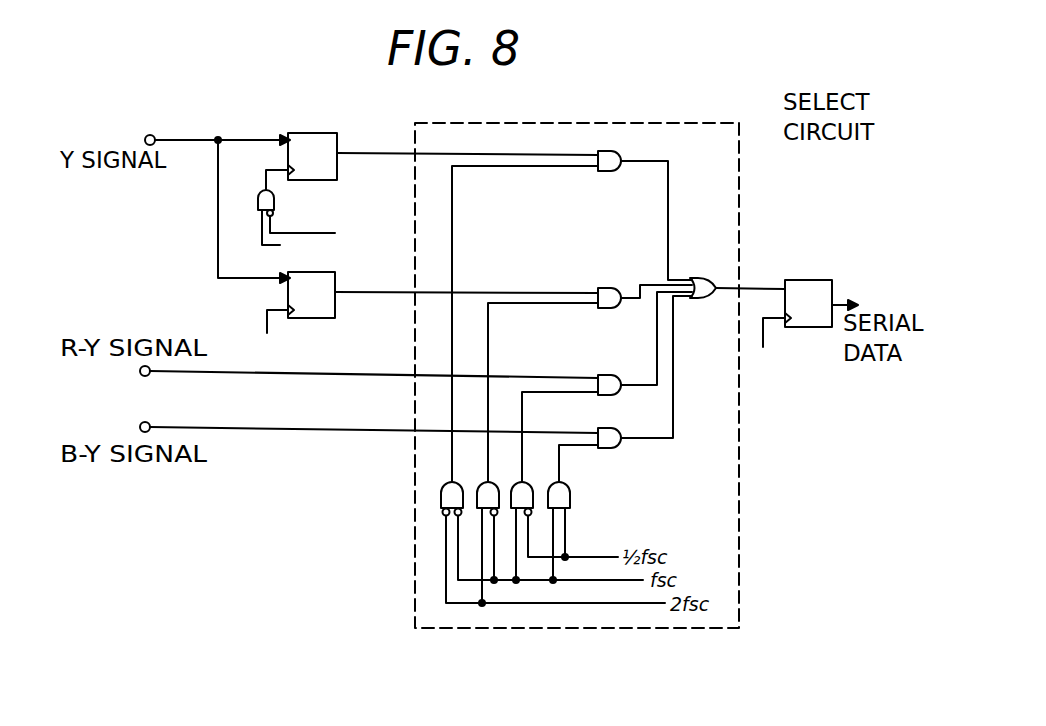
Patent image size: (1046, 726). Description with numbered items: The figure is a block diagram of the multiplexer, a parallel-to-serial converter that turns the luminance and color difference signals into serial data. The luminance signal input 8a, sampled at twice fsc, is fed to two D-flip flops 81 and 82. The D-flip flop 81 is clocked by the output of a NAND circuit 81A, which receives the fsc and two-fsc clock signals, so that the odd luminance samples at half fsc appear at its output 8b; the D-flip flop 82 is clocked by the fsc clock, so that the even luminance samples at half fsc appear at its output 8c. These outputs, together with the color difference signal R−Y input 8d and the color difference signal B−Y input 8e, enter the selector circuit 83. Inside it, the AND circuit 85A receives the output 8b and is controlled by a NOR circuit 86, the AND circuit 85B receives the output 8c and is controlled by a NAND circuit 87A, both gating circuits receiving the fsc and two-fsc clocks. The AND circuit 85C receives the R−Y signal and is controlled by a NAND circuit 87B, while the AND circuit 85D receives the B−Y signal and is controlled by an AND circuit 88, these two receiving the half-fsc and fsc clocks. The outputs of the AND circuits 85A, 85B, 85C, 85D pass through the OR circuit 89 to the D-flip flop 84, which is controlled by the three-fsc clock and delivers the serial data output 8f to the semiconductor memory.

The luminance signal input 8a is at (200, 140).
The D-flip flop 81 is at (322, 133).
The NAND circuit 81A is at (276, 202).
The output of D-flip flop 81 8b is at (368, 153).
The D-flip flop 82 is at (320, 319).
The output of D-flip flop 82 8c is at (372, 293).
The color difference signal R−Y input 8d is at (369, 375).
The color difference signal B−Y input 8e is at (343, 431).
The selector circuit 83 is at (727, 122).
The AND circuit 85A is at (609, 172).
The AND circuit 85B is at (604, 287).
The AND circuit 85C is at (601, 375).
The AND circuit 85D is at (626, 447).
The OR circuit 89 is at (706, 279).
The D-flip flop 84 is at (802, 280).
The serial data output 8f is at (842, 304).
The NOR circuit 86 is at (441, 494).
The NAND circuit 87A is at (480, 484).
The NAND circuit 87B is at (533, 492).
The AND circuit 88 is at (569, 498).